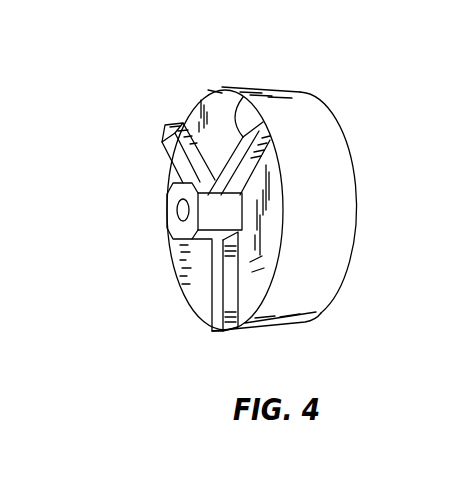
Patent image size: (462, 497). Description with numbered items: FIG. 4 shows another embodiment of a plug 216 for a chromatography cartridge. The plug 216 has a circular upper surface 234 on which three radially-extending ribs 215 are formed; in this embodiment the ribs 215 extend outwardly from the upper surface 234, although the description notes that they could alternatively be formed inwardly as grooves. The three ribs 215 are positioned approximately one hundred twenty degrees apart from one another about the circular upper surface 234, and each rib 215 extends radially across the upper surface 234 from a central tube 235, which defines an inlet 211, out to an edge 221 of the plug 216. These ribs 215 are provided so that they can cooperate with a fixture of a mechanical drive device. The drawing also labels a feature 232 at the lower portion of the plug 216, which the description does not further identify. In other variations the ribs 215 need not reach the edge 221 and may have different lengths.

The inlet 211 is at (178, 214).
The radially-extending ribs 215 is at (243, 92).
The plug 216 is at (305, 204).
The edge 221 is at (283, 206).
The bottom flange edge 232 is at (270, 330).
The upper surface 234 is at (207, 90).
The tube 235 is at (245, 221).